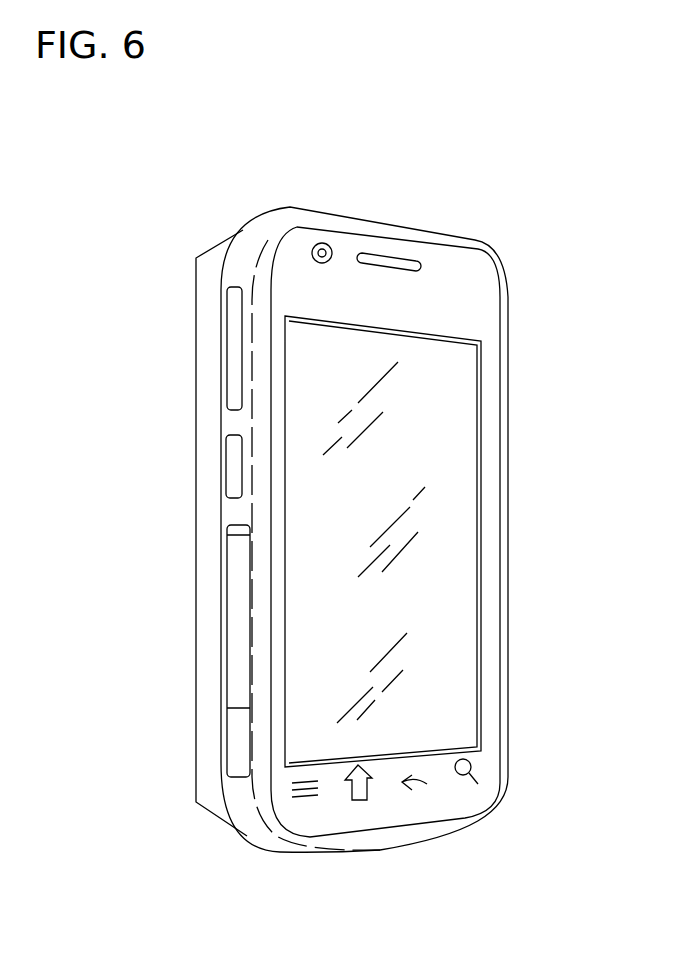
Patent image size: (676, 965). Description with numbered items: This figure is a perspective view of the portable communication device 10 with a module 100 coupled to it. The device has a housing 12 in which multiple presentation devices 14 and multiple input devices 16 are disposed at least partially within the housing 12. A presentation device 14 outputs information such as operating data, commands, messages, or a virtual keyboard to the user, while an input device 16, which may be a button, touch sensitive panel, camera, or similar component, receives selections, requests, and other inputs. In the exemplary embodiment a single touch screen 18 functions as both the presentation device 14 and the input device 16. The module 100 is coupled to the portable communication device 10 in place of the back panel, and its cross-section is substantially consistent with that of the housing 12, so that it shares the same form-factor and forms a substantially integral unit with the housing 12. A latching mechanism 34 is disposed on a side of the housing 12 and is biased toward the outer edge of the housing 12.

The portable communication device 10 is at (266, 192).
The module 100 is at (196, 286).
The housing 12 is at (260, 833).
The presentation device 14 is at (407, 256).
The input device 16 is at (232, 389).
The touch screen 18 is at (460, 637).
The latching mechanism 34 is at (235, 738).